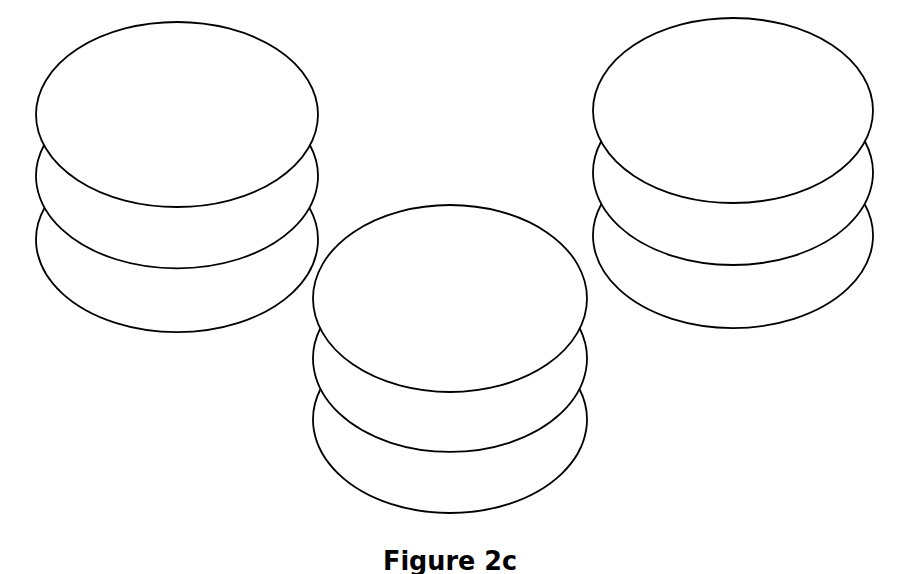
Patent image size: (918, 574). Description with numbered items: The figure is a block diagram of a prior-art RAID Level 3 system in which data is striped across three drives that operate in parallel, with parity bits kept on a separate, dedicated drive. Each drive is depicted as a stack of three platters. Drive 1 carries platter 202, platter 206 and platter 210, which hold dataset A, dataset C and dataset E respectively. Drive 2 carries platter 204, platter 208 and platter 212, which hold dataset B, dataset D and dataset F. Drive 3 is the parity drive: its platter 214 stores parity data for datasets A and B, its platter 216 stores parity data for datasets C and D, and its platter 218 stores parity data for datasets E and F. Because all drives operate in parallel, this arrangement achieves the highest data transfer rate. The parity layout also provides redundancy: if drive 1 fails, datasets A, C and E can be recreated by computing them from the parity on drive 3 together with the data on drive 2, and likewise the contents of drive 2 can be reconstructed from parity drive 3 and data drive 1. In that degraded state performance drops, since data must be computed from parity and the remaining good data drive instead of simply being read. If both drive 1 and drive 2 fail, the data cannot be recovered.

The drive 1 is at (221, 297).
The drive 2 is at (702, 295).
The drive 3 is at (450, 320).
The platter 202 is at (160, 157).
The platter 204 is at (716, 170).
The platter 206 is at (160, 249).
The platter 208 is at (716, 247).
The platter 210 is at (160, 310).
The platter 212 is at (716, 309).
The platter 214 is at (431, 364).
The platter 216 is at (431, 437).
The platter 218 is at (431, 487).